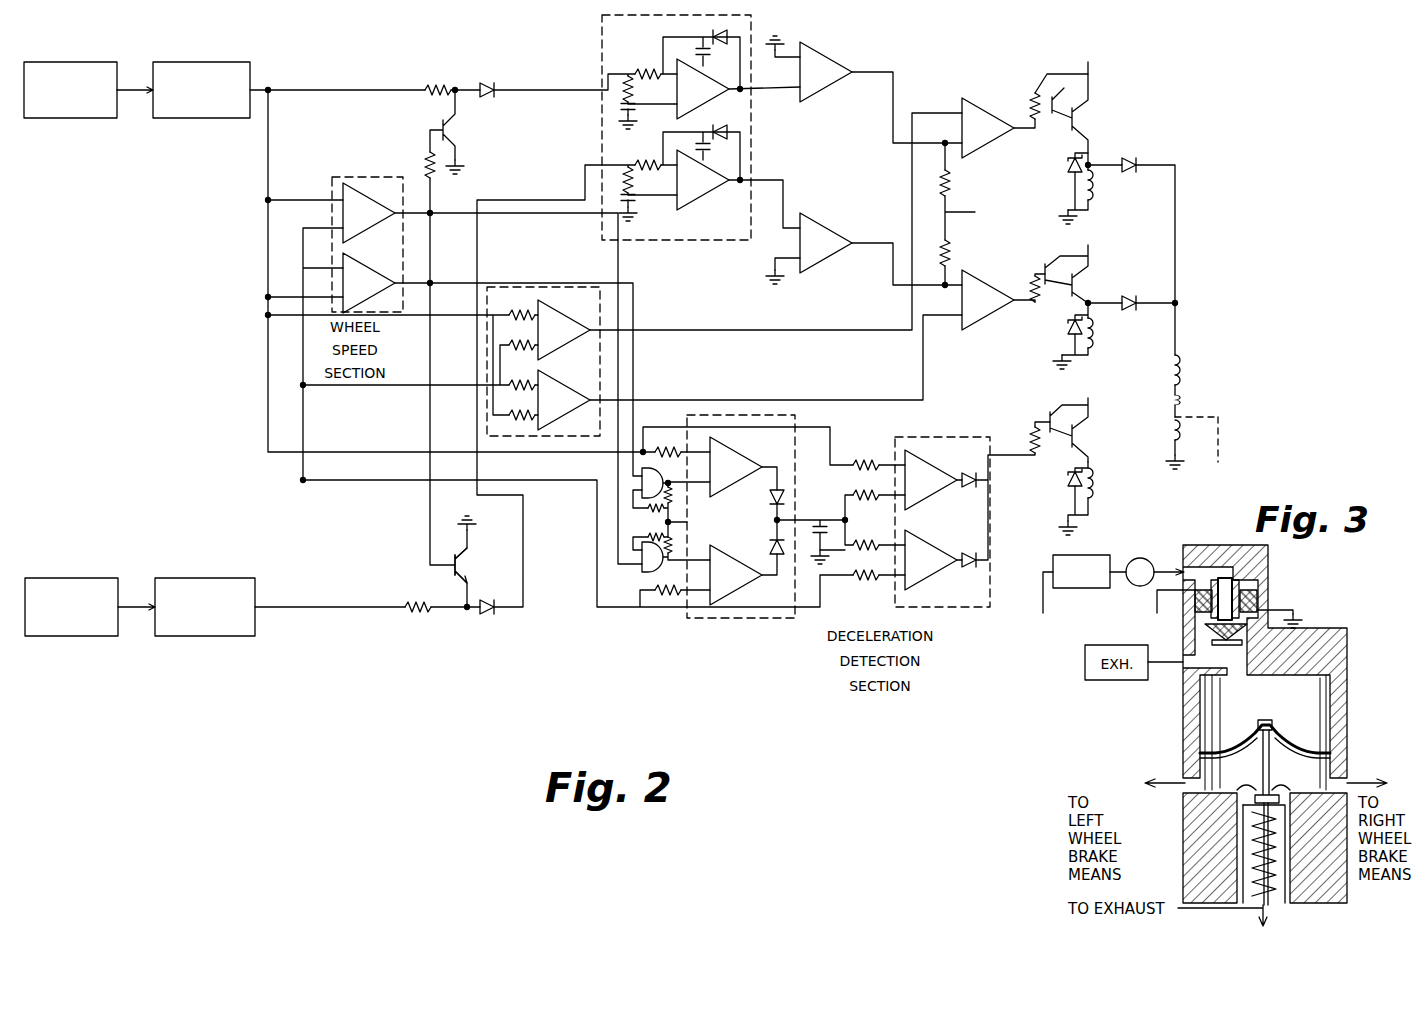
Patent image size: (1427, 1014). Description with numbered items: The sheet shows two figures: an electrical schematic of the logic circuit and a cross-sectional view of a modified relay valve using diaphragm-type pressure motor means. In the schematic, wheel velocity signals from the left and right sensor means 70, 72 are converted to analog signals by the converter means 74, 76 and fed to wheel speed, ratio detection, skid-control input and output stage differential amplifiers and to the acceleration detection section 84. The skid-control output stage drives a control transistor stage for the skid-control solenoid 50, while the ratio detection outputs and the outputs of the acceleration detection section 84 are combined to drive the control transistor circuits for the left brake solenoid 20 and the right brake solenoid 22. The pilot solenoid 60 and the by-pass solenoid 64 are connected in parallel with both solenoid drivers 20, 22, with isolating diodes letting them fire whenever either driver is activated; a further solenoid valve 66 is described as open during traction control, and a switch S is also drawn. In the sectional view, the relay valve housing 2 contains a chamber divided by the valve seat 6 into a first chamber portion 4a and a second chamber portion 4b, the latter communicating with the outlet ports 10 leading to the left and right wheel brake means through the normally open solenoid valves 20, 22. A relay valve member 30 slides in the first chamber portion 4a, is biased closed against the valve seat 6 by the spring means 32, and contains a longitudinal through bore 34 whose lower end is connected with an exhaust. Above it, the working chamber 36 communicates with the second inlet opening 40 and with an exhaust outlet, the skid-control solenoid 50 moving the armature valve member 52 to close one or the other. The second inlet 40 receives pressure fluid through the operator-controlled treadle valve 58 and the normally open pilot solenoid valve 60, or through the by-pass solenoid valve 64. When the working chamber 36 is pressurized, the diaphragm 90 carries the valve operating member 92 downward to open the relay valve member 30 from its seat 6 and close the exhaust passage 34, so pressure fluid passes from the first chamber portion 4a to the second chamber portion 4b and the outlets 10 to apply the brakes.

In FIG. 3, the relay valve housing 2 is at (1363, 660).
In FIG. 3, the first chamber portion 4a is at (1240, 839).
In FIG. 3, the second chamber portion 4b is at (1322, 771).
In FIG. 3, the valve seat 6 is at (1251, 750).
In FIG. 3, the outlet ports 10 is at (1265, 848).
In FIG. 2, the left brake solenoid valve 20 is at (1098, 338).
In FIG. 2, the right brake solenoid valve 22 is at (1098, 188).
In FIG. 3, the relay valve member 30 is at (1284, 889).
In FIG. 3, the spring means 32 is at (1250, 866).
In FIG. 3, the longitudinal through bore 34 is at (1283, 856).
In FIG. 3, the working chamber 36 is at (1307, 708).
In FIG. 3, the second inlet opening 40 is at (1204, 567).
In FIG. 2, the skid-control solenoid 50 is at (1100, 486).
In FIG. 3, the skid-control solenoid 50 is at (1258, 592).
In FIG. 3, the armature valve member 52 is at (1206, 631).
In FIG. 3, the treadle valve 58 is at (1091, 560).
In FIG. 2, the pilot solenoid valve 60 is at (1172, 362).
In FIG. 3, the pilot solenoid valve 60 is at (1141, 558).
In FIG. 2, the by-pass solenoid valve 64 is at (1182, 400).
In FIG. 2, the solenoid valve 66 is at (1170, 437).
In FIG. 2, the left wheel sensor means 70 is at (61, 62).
In FIG. 2, the right wheel sensor means 72 is at (60, 636).
In FIG. 2, the left converter means 74 is at (191, 62).
In FIG. 2, the right converter means 76 is at (201, 636).
In FIG. 2, the acceleration detection section 84 is at (602, 240).
In FIG. 3, the diaphragm 90 is at (1292, 738).
In FIG. 3, the valve operating member 92 is at (1271, 770).
In FIG. 2, the switch S is at (1232, 443).